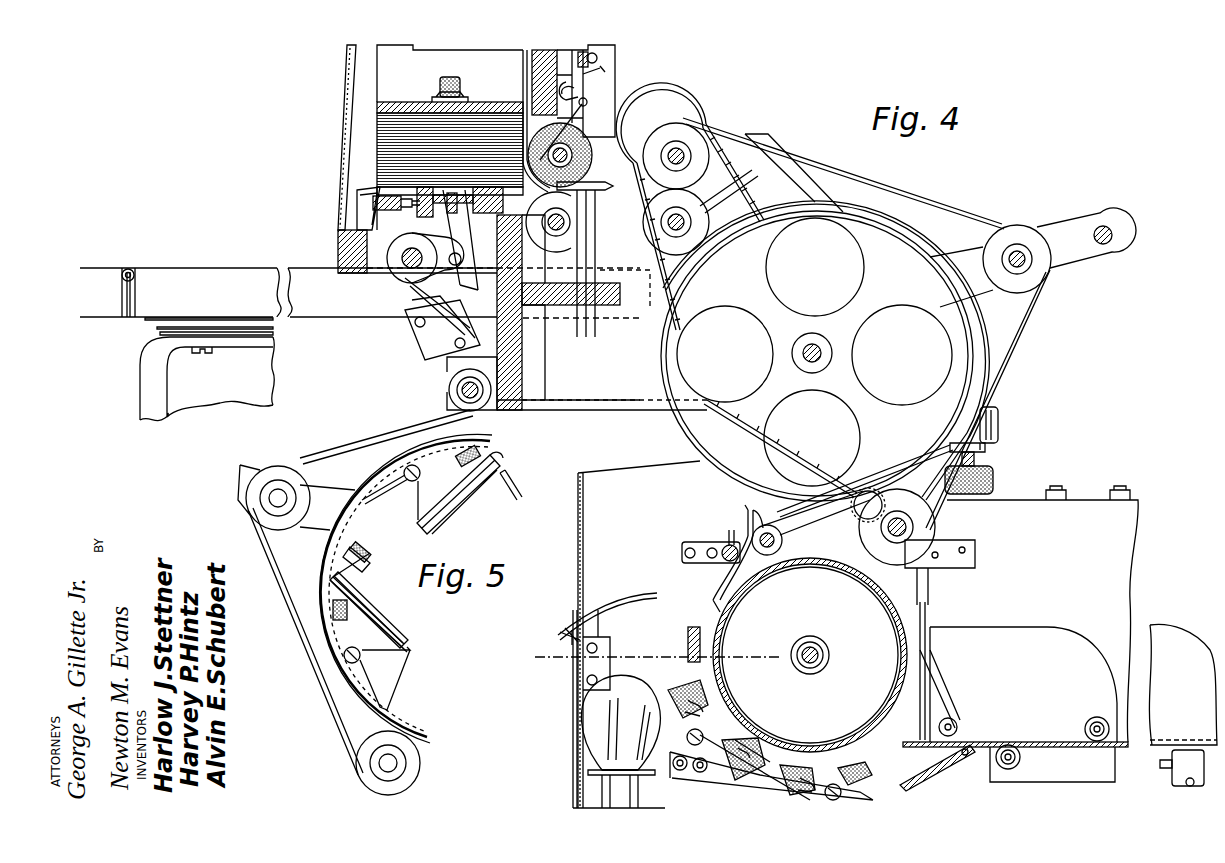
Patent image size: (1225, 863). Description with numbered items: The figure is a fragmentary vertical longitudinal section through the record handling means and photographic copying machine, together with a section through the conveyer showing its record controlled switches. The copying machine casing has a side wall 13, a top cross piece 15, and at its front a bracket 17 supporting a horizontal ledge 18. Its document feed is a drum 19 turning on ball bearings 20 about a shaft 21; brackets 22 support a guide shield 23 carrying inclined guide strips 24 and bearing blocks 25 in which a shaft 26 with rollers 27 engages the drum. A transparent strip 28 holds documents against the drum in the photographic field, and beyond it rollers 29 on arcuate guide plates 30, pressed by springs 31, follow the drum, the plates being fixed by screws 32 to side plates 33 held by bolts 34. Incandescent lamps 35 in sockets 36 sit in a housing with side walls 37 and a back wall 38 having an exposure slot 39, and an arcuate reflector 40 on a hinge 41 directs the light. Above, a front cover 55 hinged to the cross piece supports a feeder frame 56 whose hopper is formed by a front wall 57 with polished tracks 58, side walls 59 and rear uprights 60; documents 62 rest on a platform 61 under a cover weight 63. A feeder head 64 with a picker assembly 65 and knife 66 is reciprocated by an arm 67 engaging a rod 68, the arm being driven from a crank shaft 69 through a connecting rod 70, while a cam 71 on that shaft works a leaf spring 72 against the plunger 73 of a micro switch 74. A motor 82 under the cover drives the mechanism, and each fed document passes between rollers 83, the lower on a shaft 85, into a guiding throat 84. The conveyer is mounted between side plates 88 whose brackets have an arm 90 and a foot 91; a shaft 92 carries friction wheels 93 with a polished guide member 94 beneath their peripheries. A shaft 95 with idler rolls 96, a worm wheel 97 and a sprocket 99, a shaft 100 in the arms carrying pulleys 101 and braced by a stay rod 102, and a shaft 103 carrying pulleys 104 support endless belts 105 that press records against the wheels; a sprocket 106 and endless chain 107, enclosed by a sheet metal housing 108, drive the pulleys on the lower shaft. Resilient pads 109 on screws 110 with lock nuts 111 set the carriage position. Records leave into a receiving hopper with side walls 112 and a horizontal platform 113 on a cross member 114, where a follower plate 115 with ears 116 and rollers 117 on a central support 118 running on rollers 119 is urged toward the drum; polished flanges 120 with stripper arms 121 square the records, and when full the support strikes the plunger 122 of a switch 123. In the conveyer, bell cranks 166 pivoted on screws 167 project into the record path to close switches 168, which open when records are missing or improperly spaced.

In FIG. 4, the side wall 13 is at (636, 634).
In FIG. 4, the top cross piece 15 is at (97, 268).
In FIG. 4, the bracket 17 is at (915, 783).
In FIG. 4, the horizontal ledge 18 is at (1093, 498).
In FIG. 4, the drum 19 is at (872, 590).
In FIG. 4, the ball bearings 20 is at (811, 638).
In FIG. 4, the shaft 21 is at (800, 653).
In FIG. 4, the brackets 22 is at (698, 543).
In FIG. 4, the guide shield 23 is at (720, 593).
In FIG. 4, the guide strips 24 is at (795, 538).
In FIG. 4, the bearing blocks 25 is at (745, 516).
In FIG. 4, the shaft 26 is at (764, 528).
In FIG. 4, the rollers 27 is at (770, 556).
In FIG. 4, the transparent strip 28 is at (690, 635).
In FIG. 4, the rollers 29 is at (745, 760).
In FIG. 4, the arcuate guide plates 30 is at (712, 703).
In FIG. 4, the springs 31 is at (745, 768).
In FIG. 4, the screws 32 is at (678, 700).
In FIG. 4, the side plates 33 is at (772, 788).
In FIG. 4, the bolts 34 is at (685, 772).
In FIG. 4, the incandescent lamps 35 is at (588, 737).
In FIG. 4, the sockets 36 is at (600, 795).
In FIG. 4, the side walls 37 is at (608, 672).
In FIG. 4, the back wall 38 is at (574, 710).
In FIG. 4, the exposure slot 39 is at (575, 662).
In FIG. 4, the arcuate reflector 40 is at (628, 603).
In FIG. 4, the hinge 41 is at (565, 636).
In FIG. 4, the front cover 55 is at (322, 265).
In FIG. 4, the feeder frame 56 is at (521, 370).
In FIG. 4, the front wall 57 is at (545, 56).
In FIG. 4, the polished tracks 58 is at (523, 78).
In FIG. 4, the side walls 59 is at (424, 62).
In FIG. 4, the rear uprights 60 is at (346, 78).
In FIG. 4, the document support platform 61 is at (382, 190).
In FIG. 4, the documents 62 is at (388, 130).
In FIG. 4, the cover weight 63 is at (397, 100).
In FIG. 4, the feeder head 64 is at (480, 215).
In FIG. 4, the picker assembly 65 is at (356, 224).
In FIG. 4, the knife 66 is at (360, 205).
In FIG. 4, the arm 67 is at (452, 372).
In FIG. 4, the rod 68 is at (447, 208).
In FIG. 4, the crank shaft 69 is at (403, 268).
In FIG. 4, the connecting rod 70 is at (408, 246).
In FIG. 4, the cam 71 is at (410, 290).
In FIG. 4, the leaf spring 72 is at (405, 300).
In FIG. 4, the plunger 73 is at (415, 332).
In FIG. 4, the micro switch 74 is at (440, 342).
In FIG. 4, the motor 82 is at (275, 390).
In FIG. 4, the rollers 83 is at (585, 165).
In FIG. 4, the guiding throat 84 is at (598, 195).
In FIG. 4, the shaft 85 is at (558, 232).
In FIG. 4, the side plates 88 is at (762, 133).
In FIG. 5, the side plates 88 is at (390, 566).
In FIG. 4, the arm 90 is at (1070, 228).
In FIG. 5, the arm 90 is at (245, 507).
In FIG. 4, the foot 91 is at (1000, 412).
In FIG. 4, the shaft 92 is at (813, 341).
In FIG. 4, the wheels 93 is at (664, 346).
In FIG. 4, the polished guide member 94 is at (905, 240).
In FIG. 5, the polished guide member 94 is at (358, 535).
In FIG. 4, the shaft 95 is at (675, 145).
In FIG. 4, the idler rolls 96 is at (700, 220).
In FIG. 4, the worm wheel 97 is at (668, 228).
In FIG. 4, the sprocket 99 is at (722, 140).
In FIG. 4, the shaft 100 is at (1018, 250).
In FIG. 4, the pulleys 101 is at (996, 242).
In FIG. 5, the pulleys 101 is at (272, 468).
In FIG. 4, the stay rod 102 is at (1105, 225).
In FIG. 4, the shaft 103 is at (905, 527).
In FIG. 4, the pulleys 104 is at (930, 519).
In FIG. 5, the pulleys 104 is at (412, 772).
In FIG. 4, the endless belts 105 is at (918, 195).
In FIG. 5, the endless belts 105 is at (295, 618).
In FIG. 4, the sprocket 106 is at (872, 492).
In FIG. 4, the endless chain 107 is at (748, 186).
In FIG. 4, the sheet metal housing 108 is at (702, 122).
In FIG. 4, the resilient pads 109 is at (995, 480).
In FIG. 4, the screws 110 is at (978, 460).
In FIG. 4, the lock nuts 111 is at (990, 447).
In FIG. 4, the side walls 112 is at (1115, 578).
In FIG. 4, the horizontal platform 113 is at (1003, 745).
In FIG. 4, the cross member 114 is at (950, 762).
In FIG. 4, the follower plate 115 is at (927, 620).
In FIG. 4, the ears 116 is at (935, 700).
In FIG. 4, the rollers 117 is at (952, 718).
In FIG. 4, the central support 118 is at (1035, 630).
In FIG. 4, the rollers 119 is at (1008, 770).
In FIG. 4, the polished flanges 120 is at (976, 566).
In FIG. 4, the stripper arms 121 is at (927, 590).
In FIG. 4, the plunger 122 is at (1163, 766).
In FIG. 4, the switch 123 is at (1180, 780).
In FIG. 5, the bell cranks 166 is at (385, 495).
In FIG. 5, the screws 167 is at (421, 473).
In FIG. 5, the switches 168 is at (442, 518).